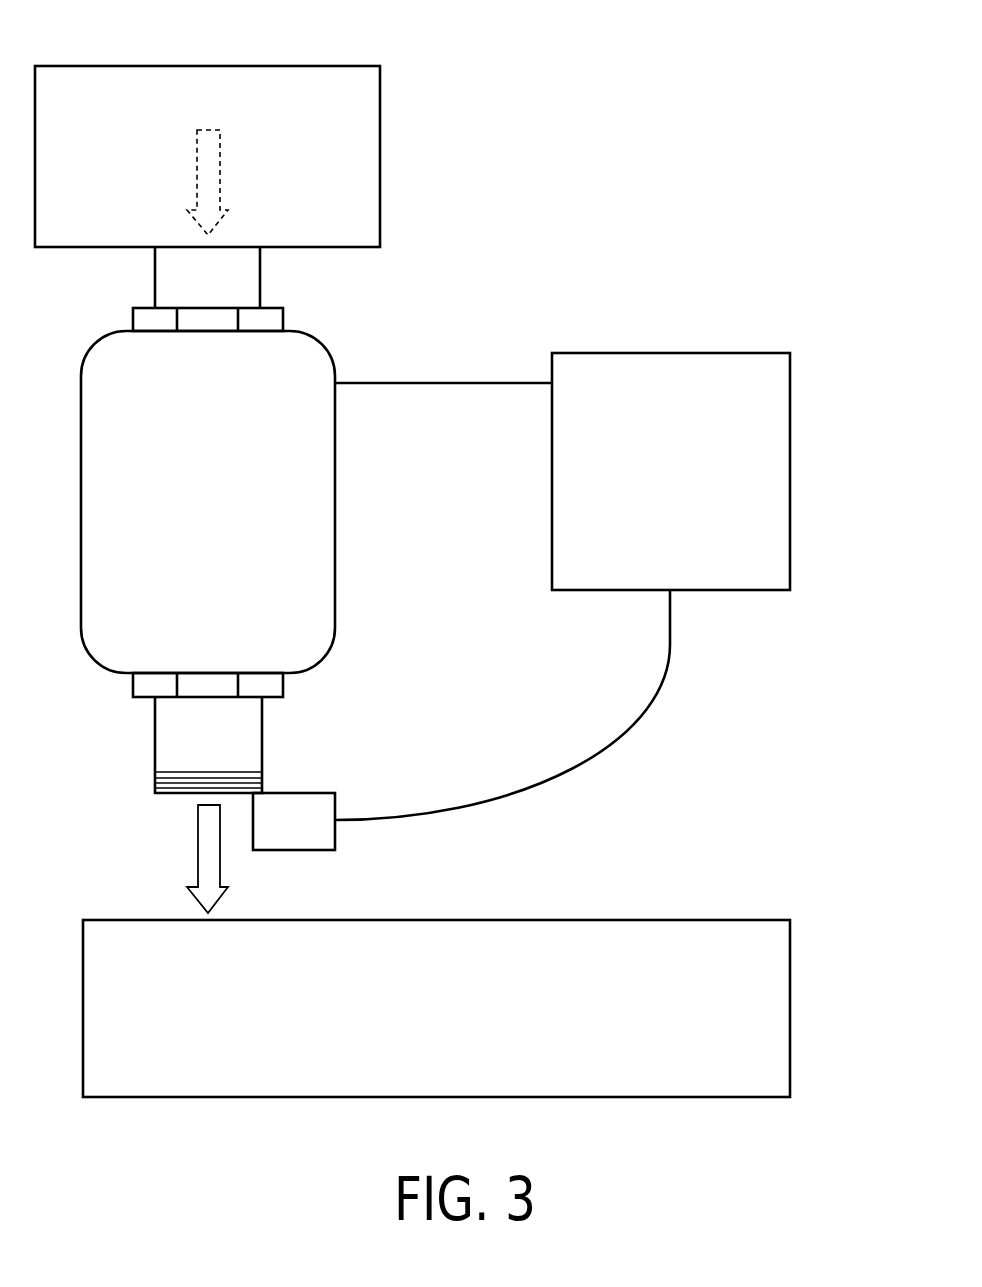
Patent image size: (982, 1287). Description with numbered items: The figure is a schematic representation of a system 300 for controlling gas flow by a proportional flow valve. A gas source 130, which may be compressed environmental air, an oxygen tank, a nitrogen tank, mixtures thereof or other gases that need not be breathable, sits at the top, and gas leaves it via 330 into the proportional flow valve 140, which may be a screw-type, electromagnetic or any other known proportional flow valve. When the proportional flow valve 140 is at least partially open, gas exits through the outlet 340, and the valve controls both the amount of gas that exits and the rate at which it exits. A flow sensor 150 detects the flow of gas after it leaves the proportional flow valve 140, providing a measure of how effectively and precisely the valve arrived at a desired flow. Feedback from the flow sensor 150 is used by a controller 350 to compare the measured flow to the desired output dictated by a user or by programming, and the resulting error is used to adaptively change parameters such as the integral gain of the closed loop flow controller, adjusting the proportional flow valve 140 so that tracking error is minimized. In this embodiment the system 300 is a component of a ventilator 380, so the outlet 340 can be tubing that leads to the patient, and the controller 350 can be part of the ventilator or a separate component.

The system 300 is at (715, 93).
The gas source 130 is at (380, 128).
The gas source exit 330 is at (260, 290).
The proportional flow valve 140 is at (335, 470).
The outlet 340 is at (262, 746).
The flow sensor 150 is at (338, 803).
The controller 350 is at (790, 470).
The ventilator 380 is at (790, 993).